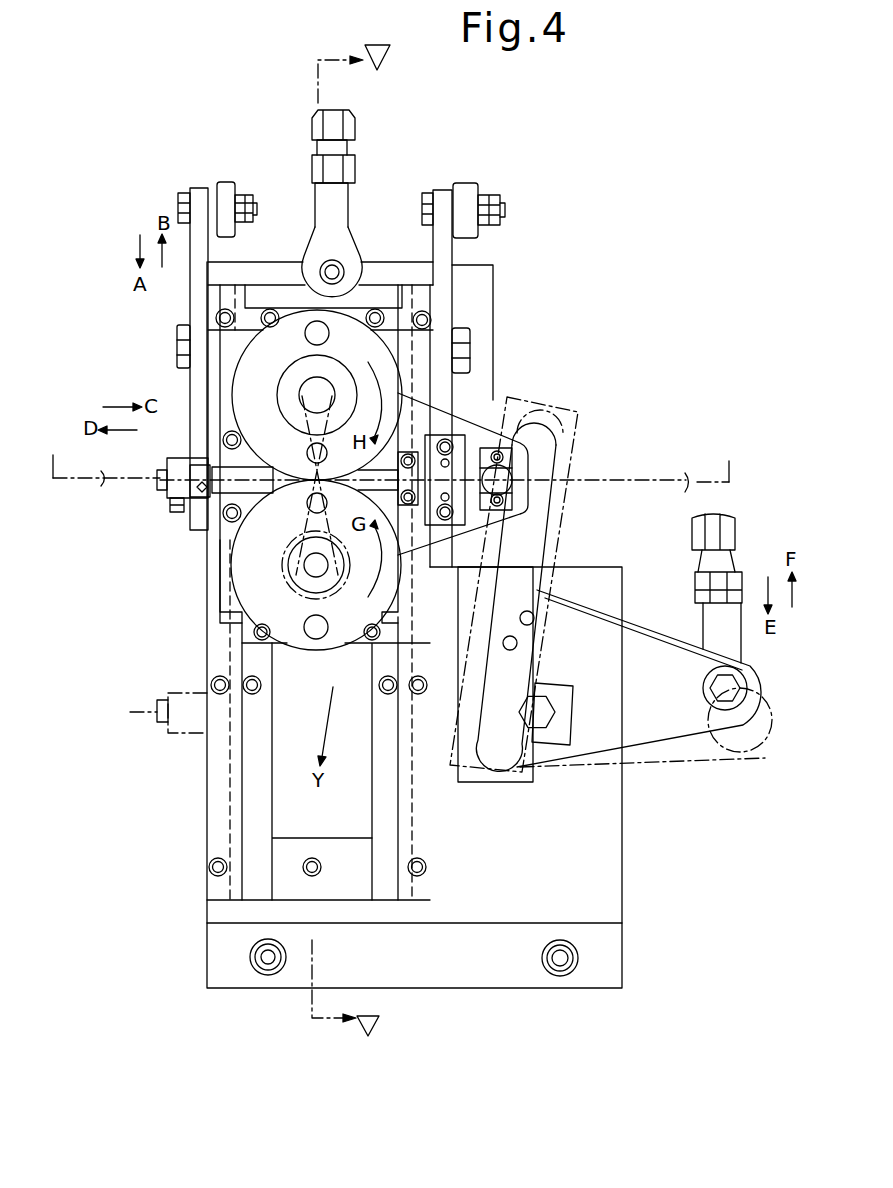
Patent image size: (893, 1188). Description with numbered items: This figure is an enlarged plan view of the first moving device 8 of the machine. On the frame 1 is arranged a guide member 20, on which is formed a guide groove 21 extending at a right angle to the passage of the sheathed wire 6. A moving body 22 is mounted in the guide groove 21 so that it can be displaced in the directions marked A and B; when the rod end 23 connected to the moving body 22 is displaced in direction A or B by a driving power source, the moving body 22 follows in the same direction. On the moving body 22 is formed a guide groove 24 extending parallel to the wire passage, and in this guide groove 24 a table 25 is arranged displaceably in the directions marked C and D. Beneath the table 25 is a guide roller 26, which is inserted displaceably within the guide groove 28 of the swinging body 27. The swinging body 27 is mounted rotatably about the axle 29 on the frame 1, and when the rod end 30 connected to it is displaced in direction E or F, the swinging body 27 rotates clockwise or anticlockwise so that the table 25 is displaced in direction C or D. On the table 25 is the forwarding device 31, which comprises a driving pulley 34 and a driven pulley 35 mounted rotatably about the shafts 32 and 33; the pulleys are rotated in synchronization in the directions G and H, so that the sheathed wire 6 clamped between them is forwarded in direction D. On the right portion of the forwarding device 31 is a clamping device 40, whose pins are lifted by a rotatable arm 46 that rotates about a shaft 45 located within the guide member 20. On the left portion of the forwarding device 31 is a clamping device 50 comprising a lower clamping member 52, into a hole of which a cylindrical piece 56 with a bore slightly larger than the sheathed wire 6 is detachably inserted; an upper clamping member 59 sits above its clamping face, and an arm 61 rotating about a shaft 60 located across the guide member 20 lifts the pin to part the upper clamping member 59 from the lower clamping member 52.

The frame 1 is at (607, 852).
The sheathed wire 6 is at (637, 480).
The first moving device 8 is at (508, 282).
The guide member 20 is at (215, 807).
The guide groove 21 is at (245, 765).
The moving body 22 is at (255, 312).
The rod end 23 is at (322, 197).
The guide groove 24 is at (393, 343).
The table 25 is at (227, 593).
The guide roller 26 is at (498, 470).
The swinging body 27 is at (563, 507).
The guide groove 28 is at (517, 648).
The axle 29 is at (558, 708).
The rod end 30 is at (715, 618).
The forwarding device 31 is at (224, 397).
The shaft 32 is at (305, 566).
The shaft 33 is at (310, 390).
The driving pulley 34 is at (267, 612).
The driven pulley 35 is at (250, 378).
The clamping device 40 is at (445, 437).
The shaft 45 is at (472, 343).
The rotatable arm 46 is at (445, 196).
The clamping device 50 is at (163, 498).
The lower clamping member 52 is at (182, 461).
The cylindrical piece 56 is at (155, 485).
The upper clamping member 59 is at (187, 473).
The shaft 60 is at (183, 343).
The arm 61 is at (201, 196).